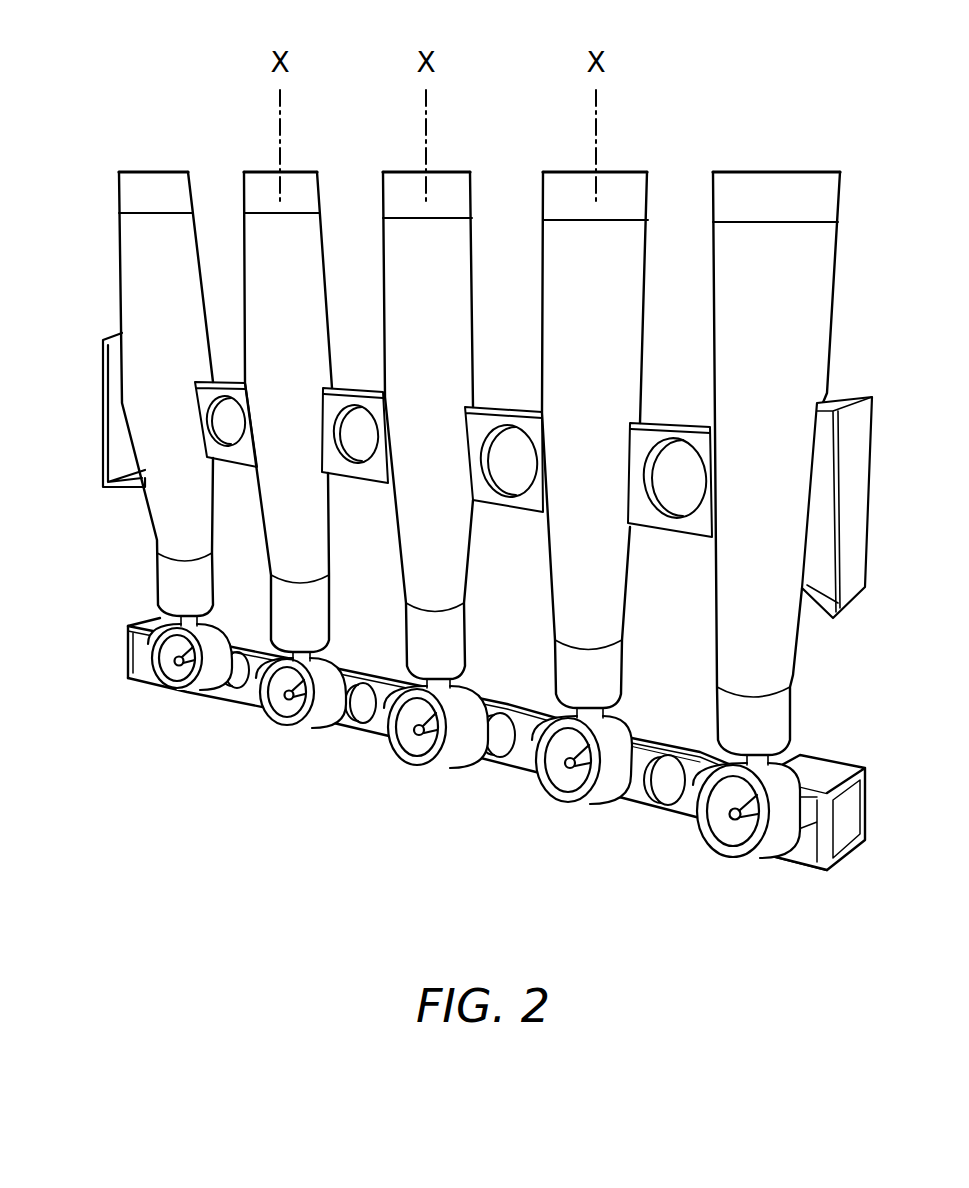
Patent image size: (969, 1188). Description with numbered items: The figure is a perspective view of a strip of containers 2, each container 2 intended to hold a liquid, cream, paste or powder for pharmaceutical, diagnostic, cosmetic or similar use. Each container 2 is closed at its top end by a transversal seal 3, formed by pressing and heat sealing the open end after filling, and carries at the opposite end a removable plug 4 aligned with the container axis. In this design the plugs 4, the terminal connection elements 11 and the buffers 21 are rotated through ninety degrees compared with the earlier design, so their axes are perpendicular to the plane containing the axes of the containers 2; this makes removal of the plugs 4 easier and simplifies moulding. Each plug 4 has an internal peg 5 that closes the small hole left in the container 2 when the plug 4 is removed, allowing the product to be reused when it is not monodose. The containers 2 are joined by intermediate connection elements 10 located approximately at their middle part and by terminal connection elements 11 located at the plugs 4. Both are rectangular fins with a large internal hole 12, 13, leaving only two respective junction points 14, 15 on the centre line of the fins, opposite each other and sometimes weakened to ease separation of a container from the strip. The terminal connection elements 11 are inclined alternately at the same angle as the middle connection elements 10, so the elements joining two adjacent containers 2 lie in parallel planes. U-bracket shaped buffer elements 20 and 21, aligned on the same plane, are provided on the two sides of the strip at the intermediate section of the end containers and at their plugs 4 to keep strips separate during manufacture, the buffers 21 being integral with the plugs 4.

The container 2 is at (812, 357).
The transversal seal 3 is at (822, 194).
The removable plug 4 is at (561, 805).
The internal peg 5 is at (427, 742).
The intermediate connection element 10 is at (483, 420).
The terminal connection element 11 is at (616, 788).
The internal hole 12 is at (683, 458).
The internal hole 13 is at (668, 782).
The junction point 14 is at (695, 480).
The junction point 15 is at (673, 797).
The middle buffer 20 is at (850, 503).
The buffer 21 is at (139, 663).